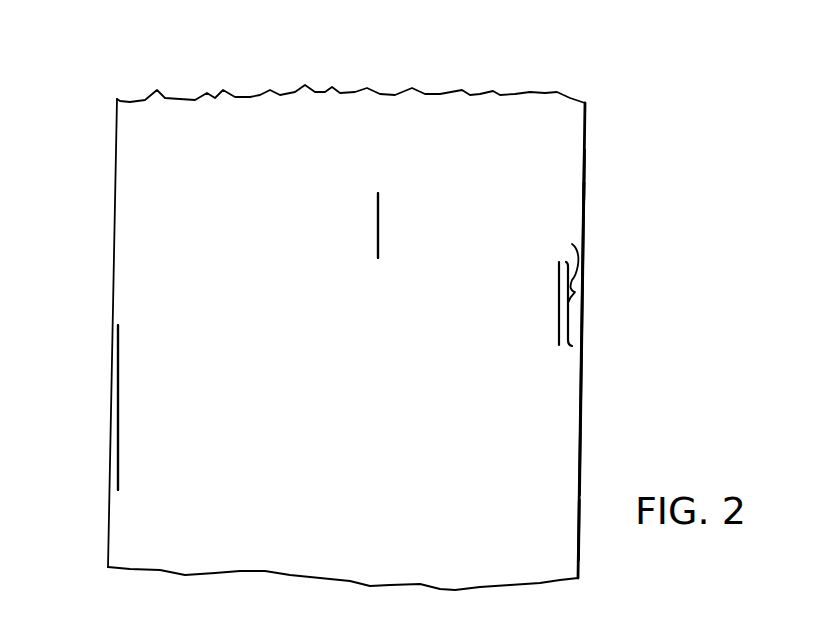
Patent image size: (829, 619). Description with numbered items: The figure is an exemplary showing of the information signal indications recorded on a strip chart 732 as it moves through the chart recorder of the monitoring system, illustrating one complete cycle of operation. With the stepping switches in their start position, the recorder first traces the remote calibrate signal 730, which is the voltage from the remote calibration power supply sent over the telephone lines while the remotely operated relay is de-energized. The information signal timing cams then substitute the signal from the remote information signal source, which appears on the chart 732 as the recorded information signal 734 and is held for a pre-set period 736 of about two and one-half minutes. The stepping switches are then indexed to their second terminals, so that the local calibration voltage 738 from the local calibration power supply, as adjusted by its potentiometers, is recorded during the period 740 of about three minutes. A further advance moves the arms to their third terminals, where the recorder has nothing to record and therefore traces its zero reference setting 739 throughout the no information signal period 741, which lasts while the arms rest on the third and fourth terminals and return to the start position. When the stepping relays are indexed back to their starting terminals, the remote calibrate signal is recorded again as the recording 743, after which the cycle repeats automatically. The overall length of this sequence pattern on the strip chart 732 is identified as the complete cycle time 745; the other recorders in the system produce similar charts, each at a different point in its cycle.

The remote calibrate signal 730 is at (563, 190).
The strip chart 732 is at (98, 91).
The recorded information signal 734 is at (378, 229).
The period 736 is at (382, 193).
The local calibration voltage 738 is at (559, 263).
The zero reference setting 739 is at (118, 366).
The period 740 is at (562, 266).
The no information signal period 741 is at (118, 325).
The recording 743 is at (555, 499).
The complete cycle time 745 is at (595, 183).